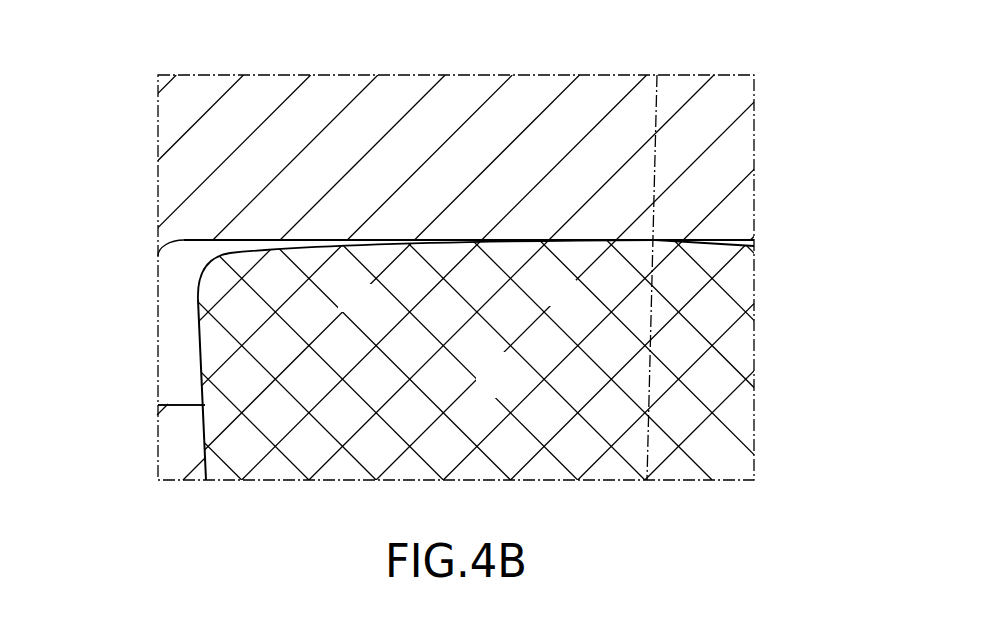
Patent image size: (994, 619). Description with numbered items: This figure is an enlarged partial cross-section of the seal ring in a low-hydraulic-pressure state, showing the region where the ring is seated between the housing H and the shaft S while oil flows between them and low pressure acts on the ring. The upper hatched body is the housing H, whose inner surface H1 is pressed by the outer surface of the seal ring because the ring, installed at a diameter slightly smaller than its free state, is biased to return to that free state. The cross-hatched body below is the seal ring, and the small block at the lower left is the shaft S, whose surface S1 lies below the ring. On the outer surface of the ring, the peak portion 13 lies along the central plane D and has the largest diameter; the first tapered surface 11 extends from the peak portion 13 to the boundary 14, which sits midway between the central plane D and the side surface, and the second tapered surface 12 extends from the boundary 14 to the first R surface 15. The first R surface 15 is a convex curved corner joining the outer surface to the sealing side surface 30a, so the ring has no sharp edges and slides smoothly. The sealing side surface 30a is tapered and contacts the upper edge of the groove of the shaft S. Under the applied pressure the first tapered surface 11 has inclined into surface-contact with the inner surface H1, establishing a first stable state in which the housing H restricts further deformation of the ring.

The first tapered surface 11 is at (650, 250).
The second tapered surface 12 is at (242, 258).
The peak portion 13 is at (655, 240).
The boundary 14 is at (464, 242).
The first R surface 15 is at (204, 282).
The sealing side surface 30a is at (198, 352).
The housing H is at (472, 173).
The inner layer I is at (510, 391).
The shaft S is at (195, 457).
The inner surface of the housing H1 is at (160, 256).
The upper surface of substrate S1 is at (187, 404).
The central plane D is at (657, 261).